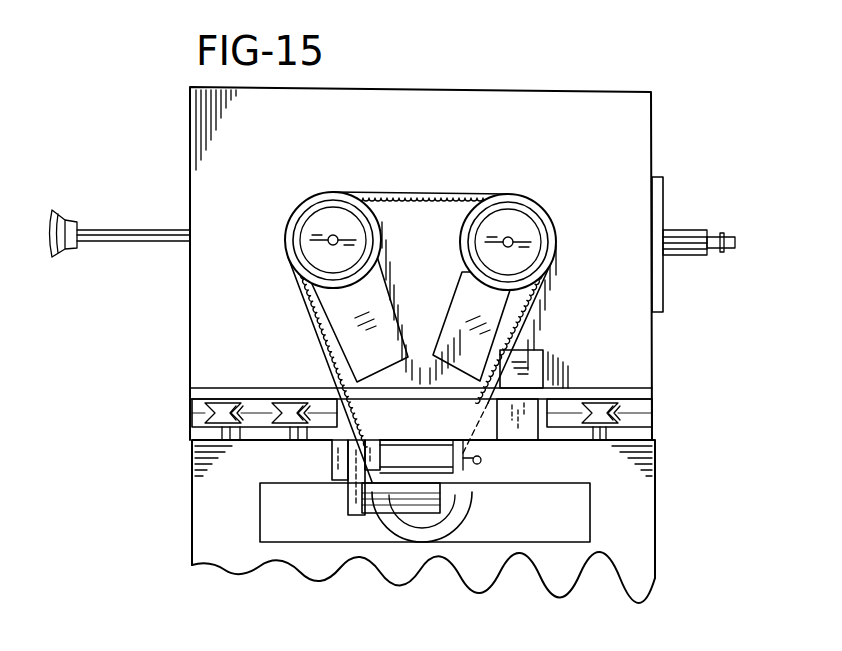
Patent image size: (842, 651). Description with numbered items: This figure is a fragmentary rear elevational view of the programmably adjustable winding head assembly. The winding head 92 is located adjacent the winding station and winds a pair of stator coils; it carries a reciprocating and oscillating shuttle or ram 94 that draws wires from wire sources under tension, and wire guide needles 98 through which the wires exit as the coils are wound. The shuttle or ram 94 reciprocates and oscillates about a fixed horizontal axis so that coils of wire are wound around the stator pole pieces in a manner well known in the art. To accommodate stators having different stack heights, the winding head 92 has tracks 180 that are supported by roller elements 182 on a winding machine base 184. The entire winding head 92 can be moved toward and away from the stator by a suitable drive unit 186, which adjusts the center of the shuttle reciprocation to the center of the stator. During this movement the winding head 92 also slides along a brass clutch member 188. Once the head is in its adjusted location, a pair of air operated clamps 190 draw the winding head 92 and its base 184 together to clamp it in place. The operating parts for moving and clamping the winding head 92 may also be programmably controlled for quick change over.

The winding head 92 is at (638, 118).
The reciprocating and oscillating shuttle or ram 94 is at (128, 228).
The wire guide needles 98 is at (720, 233).
The tracks 180 is at (200, 413).
The roller elements 182 is at (612, 398).
The winding machine base 184 is at (645, 488).
The drive unit 186 is at (413, 512).
The brass clutch member 188 is at (528, 428).
The air operated clamps 190 is at (541, 352).